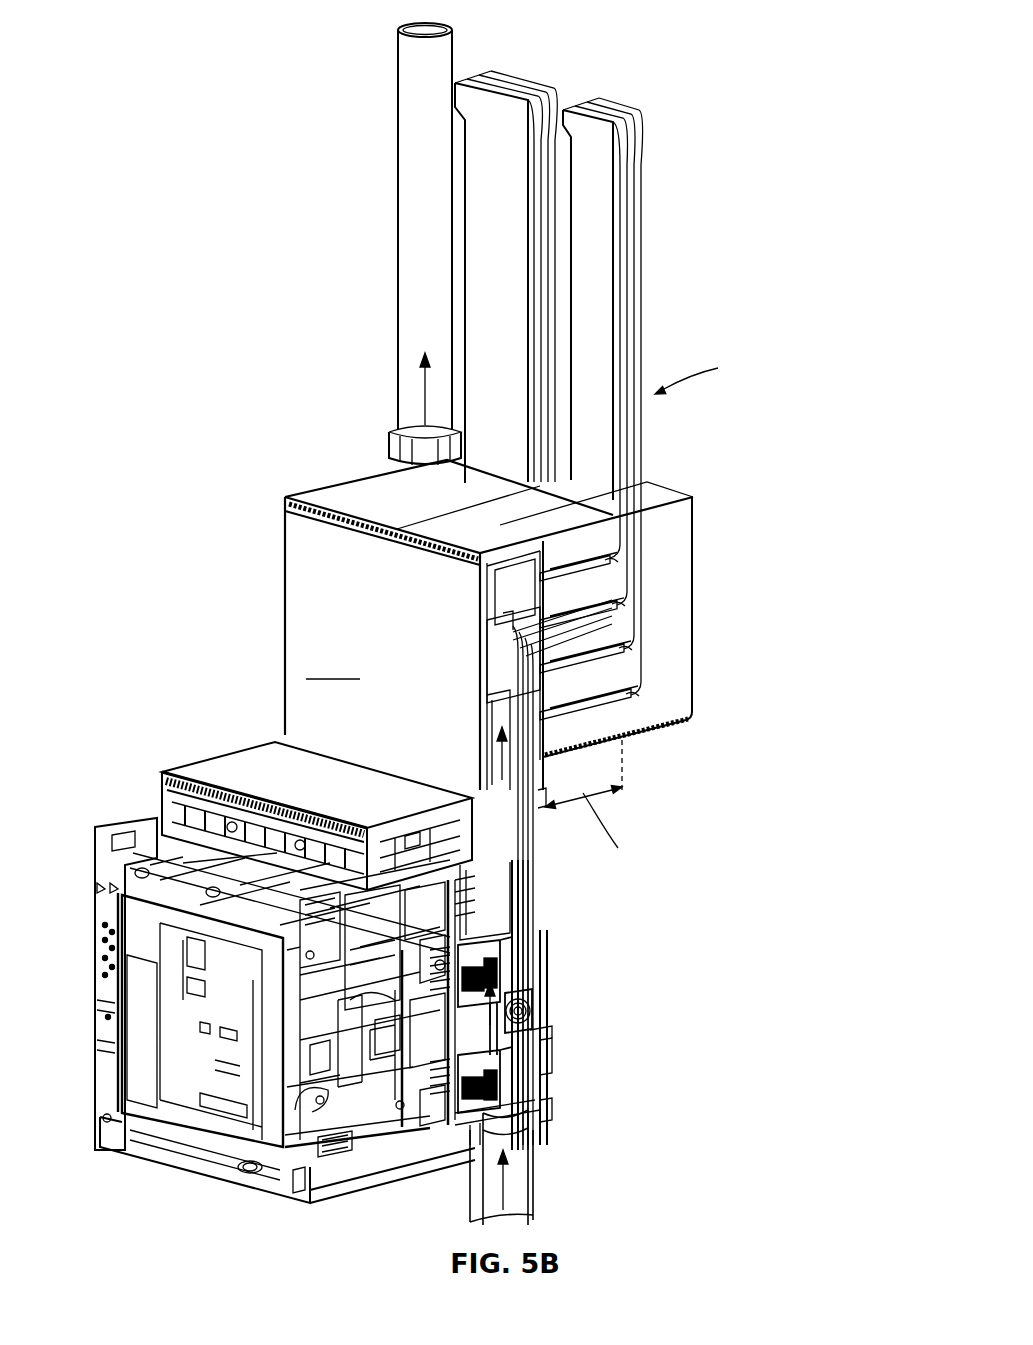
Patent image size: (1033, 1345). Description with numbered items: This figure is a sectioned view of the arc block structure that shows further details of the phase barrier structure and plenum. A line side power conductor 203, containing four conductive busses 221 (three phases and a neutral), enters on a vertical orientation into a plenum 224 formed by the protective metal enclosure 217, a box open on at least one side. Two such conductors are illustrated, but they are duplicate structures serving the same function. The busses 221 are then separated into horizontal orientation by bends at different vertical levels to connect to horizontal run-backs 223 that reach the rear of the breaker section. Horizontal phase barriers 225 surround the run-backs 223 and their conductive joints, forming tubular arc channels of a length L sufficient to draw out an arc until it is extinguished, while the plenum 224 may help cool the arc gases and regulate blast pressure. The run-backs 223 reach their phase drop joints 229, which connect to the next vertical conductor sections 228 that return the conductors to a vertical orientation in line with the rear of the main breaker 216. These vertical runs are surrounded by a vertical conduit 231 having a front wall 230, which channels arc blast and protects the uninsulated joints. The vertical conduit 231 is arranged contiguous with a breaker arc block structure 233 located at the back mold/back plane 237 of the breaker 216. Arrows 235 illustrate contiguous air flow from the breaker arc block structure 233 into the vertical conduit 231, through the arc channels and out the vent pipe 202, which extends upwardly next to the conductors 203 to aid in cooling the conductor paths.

The vent pipe 202 is at (430, 113).
The line side power conductor 203 is at (488, 178).
The main breaker 216 is at (208, 1077).
The protective metal enclosure 217 is at (695, 524).
The conductive busses 221 is at (711, 371).
The horizontal run-backs 223 is at (648, 569).
The plenum 224 is at (682, 527).
The horizontal phase barriers 225 is at (605, 549).
The vertical conductor sections 228 is at (495, 708).
The phase drop joints 229 is at (495, 632).
The front wall 230 is at (489, 625).
The vertical conduit 231 is at (495, 578).
The breaker arc block structure 233 is at (481, 912).
The arrows 235 is at (423, 402).
The back mold/back plane 237 is at (542, 945).